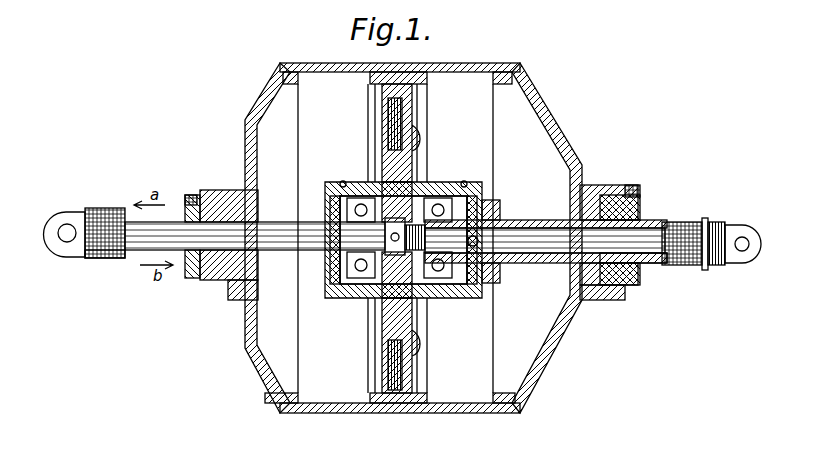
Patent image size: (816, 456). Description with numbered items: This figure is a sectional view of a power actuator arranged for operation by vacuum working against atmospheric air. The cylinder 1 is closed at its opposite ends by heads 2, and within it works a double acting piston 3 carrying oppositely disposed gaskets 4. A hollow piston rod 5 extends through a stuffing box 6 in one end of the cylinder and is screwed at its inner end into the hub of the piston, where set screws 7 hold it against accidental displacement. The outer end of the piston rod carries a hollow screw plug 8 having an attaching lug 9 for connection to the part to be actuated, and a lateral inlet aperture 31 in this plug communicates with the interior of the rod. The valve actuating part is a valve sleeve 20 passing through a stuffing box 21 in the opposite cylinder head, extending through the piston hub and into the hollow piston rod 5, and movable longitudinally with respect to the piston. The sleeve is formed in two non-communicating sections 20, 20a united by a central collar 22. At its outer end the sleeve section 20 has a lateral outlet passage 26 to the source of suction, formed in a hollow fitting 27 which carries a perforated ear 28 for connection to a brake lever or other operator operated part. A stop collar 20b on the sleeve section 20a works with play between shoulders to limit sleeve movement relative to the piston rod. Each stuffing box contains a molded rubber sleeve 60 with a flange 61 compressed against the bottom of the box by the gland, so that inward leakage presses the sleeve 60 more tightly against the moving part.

The cylinder 1 is at (488, 64).
The heads 2 is at (262, 110).
The double acting piston 3 is at (412, 150).
The gaskets 4 is at (388, 413).
The hollow piston rod 5 is at (652, 220).
The stuffing box 6 is at (605, 300).
The set screws 7 is at (500, 200).
The hollow screw plug 8 is at (714, 266).
The attaching lug 9 is at (750, 243).
The valve sleeve 20 is at (140, 250).
The valve sleeve section 20a is at (537, 220).
The stop collar 20b is at (650, 263).
The stuffing box 21 is at (212, 280).
The collar 22 is at (368, 298).
The lateral outlet passage 26 is at (102, 209).
The hollow fitting 27 is at (93, 259).
The perforated ear 28 is at (58, 233).
The lateral inlet aperture 31 is at (690, 221).
The sleeve 60 is at (626, 187).
The flange 61 is at (600, 185).